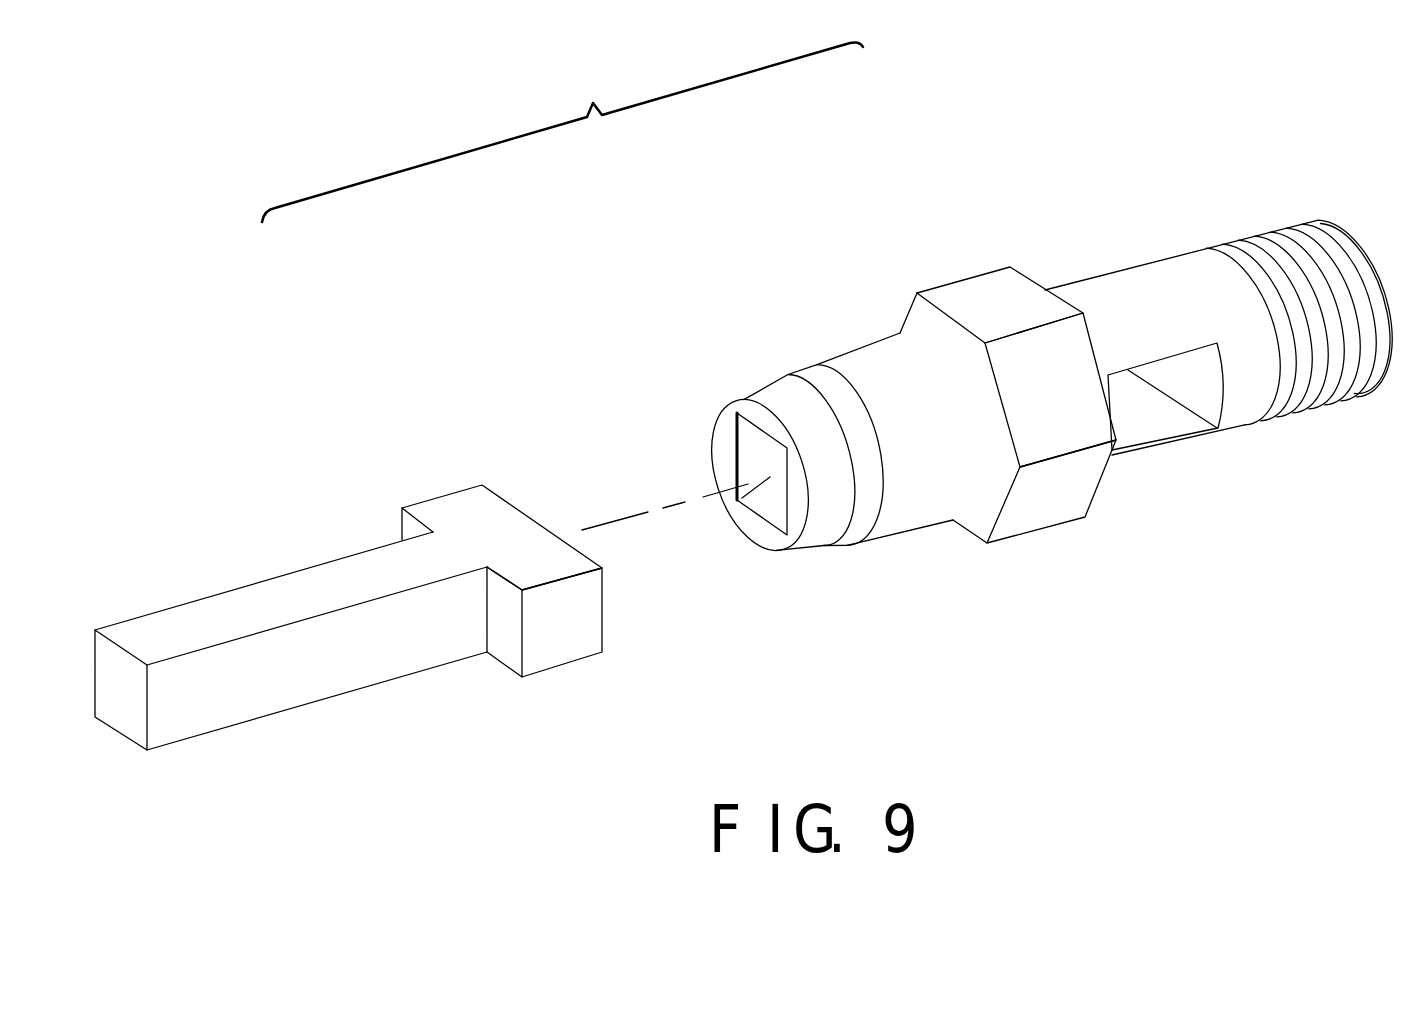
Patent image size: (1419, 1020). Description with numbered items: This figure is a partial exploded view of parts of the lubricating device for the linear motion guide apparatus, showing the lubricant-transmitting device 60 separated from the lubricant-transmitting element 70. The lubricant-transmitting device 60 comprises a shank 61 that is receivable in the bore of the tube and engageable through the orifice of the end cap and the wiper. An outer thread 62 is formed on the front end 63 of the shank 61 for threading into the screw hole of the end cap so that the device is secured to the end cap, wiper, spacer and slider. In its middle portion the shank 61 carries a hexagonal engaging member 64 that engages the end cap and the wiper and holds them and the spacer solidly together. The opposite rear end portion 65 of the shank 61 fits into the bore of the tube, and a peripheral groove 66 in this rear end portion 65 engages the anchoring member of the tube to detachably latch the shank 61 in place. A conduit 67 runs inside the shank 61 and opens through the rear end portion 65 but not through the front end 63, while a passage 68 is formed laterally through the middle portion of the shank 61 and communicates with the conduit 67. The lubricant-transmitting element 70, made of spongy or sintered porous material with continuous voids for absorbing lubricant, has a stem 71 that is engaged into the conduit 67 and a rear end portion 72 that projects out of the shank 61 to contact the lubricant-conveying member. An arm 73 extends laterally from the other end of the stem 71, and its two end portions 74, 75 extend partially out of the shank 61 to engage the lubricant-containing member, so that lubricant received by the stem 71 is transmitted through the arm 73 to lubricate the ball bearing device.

The lubricant-transmitting device 60 is at (698, 305).
The shank 61 is at (1181, 362).
The outer thread 62 is at (1333, 377).
The front end 63 is at (1362, 246).
The hexagonal engaging member 64 is at (991, 286).
The rear end portion 65 is at (845, 347).
The peripheral groove 66 is at (870, 518).
The conduit 67 is at (746, 448).
The passage 68 is at (1163, 425).
The lubricant-transmitting element 70 is at (233, 578).
The stem 71 is at (280, 683).
The rear end portion 72 is at (125, 722).
The arm 73 is at (502, 527).
The end portion 74 is at (552, 638).
The end portion 75 is at (402, 527).